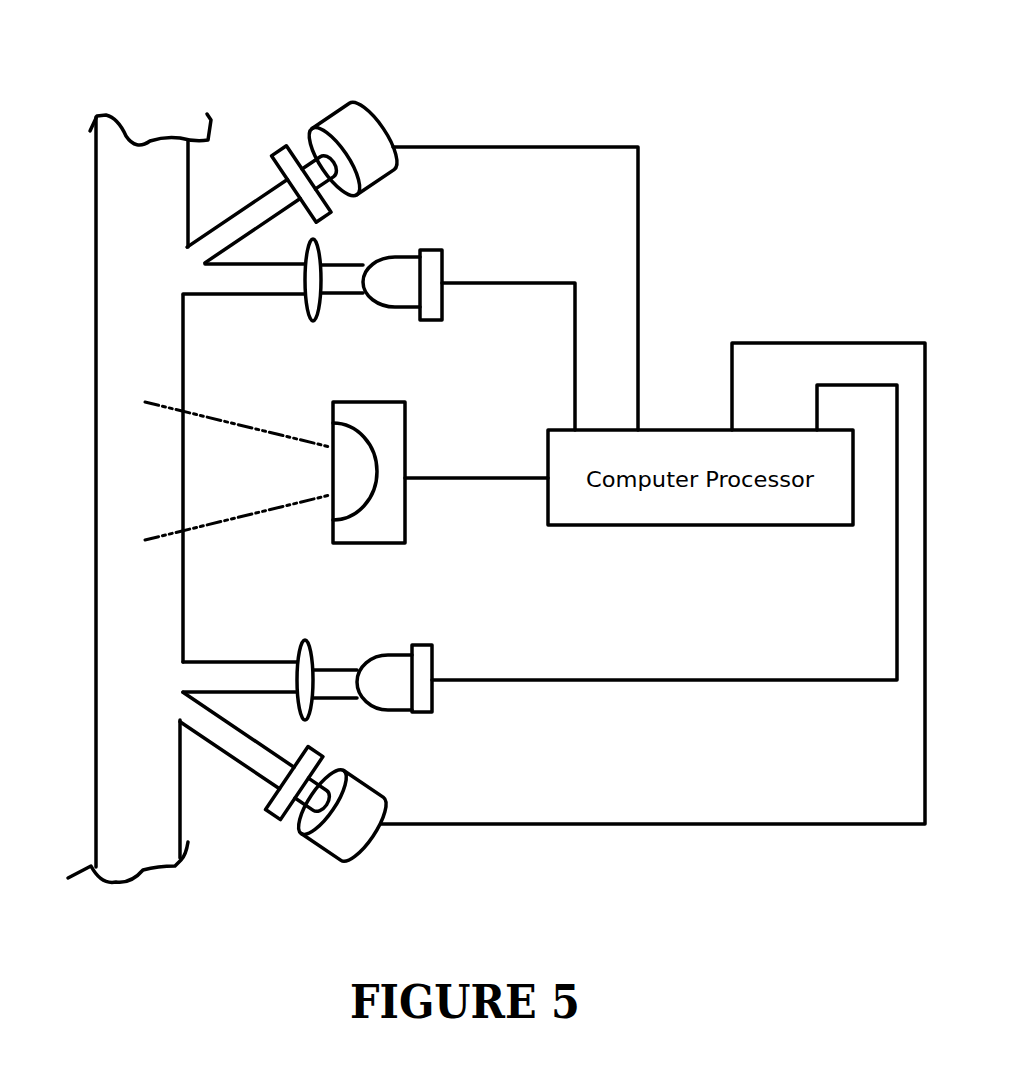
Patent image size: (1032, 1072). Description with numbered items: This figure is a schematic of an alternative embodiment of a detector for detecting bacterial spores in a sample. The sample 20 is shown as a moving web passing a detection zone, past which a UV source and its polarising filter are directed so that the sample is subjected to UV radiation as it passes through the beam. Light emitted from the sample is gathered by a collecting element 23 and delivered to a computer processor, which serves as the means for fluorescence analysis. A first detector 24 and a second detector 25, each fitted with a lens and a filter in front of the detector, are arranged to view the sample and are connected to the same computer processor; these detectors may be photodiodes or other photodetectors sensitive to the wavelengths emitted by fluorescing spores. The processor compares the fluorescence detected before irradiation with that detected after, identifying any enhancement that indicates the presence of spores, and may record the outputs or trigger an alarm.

The moving web / sheet material 20 is at (63, 310).
The collecting lens 23 is at (407, 423).
The first detector 24 is at (443, 267).
The second detector 25 is at (432, 703).